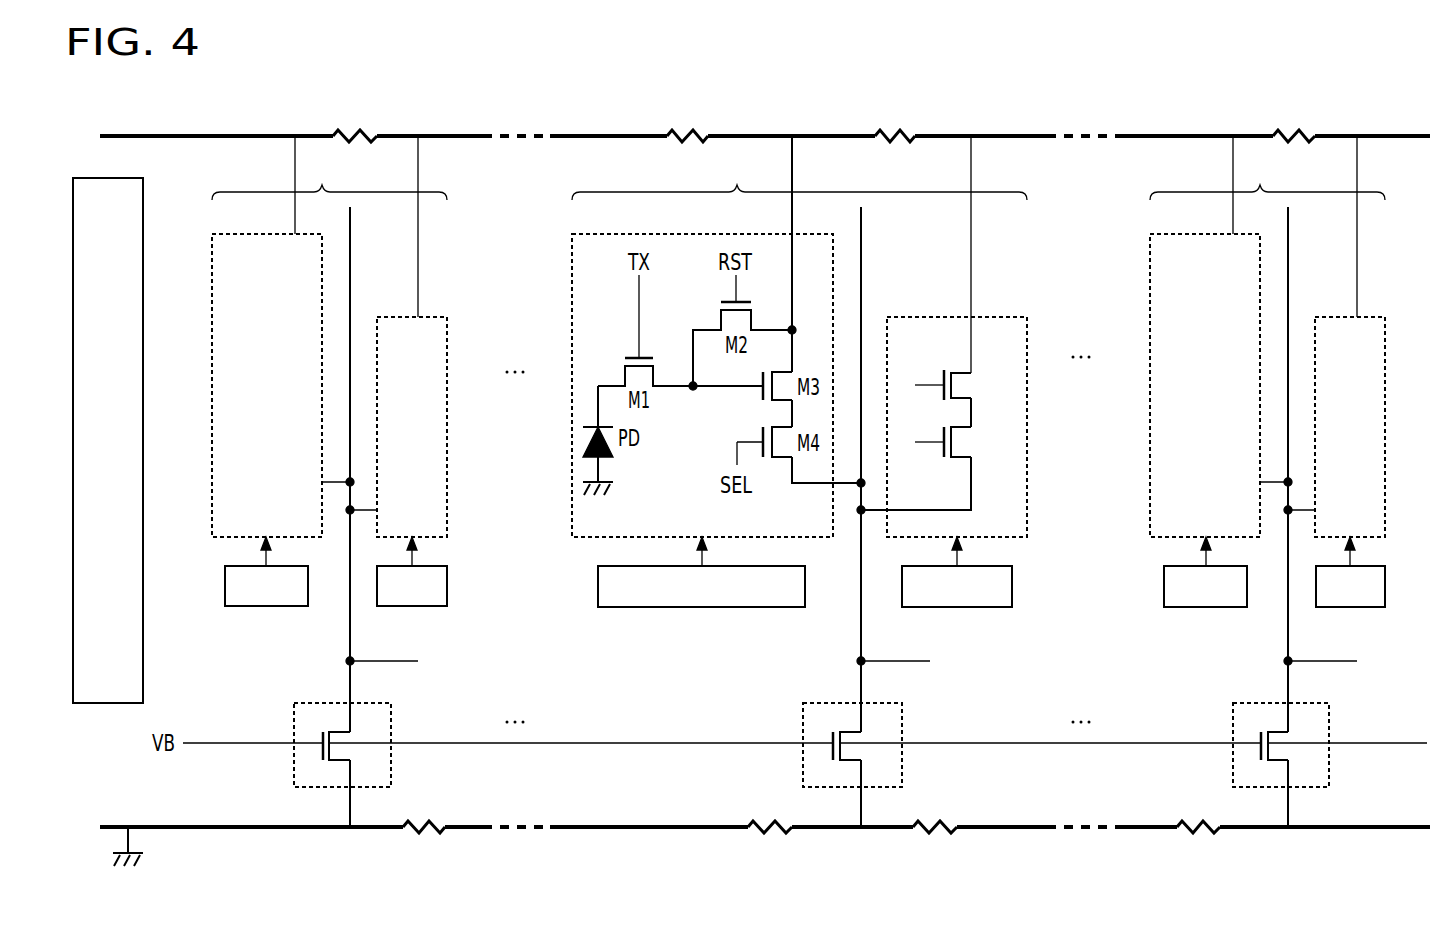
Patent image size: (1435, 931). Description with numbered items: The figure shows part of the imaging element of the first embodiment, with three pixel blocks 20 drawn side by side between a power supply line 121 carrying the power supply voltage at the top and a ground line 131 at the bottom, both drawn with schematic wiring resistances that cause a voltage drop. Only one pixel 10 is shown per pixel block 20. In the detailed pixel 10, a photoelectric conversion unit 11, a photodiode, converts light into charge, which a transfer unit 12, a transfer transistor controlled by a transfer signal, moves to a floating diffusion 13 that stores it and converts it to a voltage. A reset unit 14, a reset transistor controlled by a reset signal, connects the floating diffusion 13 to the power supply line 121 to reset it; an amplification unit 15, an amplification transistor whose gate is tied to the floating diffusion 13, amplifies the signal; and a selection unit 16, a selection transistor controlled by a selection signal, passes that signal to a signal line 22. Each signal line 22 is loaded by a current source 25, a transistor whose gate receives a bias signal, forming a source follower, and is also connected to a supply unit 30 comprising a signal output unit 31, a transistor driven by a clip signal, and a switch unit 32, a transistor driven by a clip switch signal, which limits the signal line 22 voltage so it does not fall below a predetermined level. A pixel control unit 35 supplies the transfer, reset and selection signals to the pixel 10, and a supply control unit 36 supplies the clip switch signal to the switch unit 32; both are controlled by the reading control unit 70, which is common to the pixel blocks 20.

The power supply line 121 is at (253, 133).
The ground line 131 is at (238, 830).
The reading control unit 70 is at (117, 703).
The pixel block 20 is at (798, 181).
The pixel 10 is at (226, 234).
The photoelectric conversion unit 11 is at (615, 455).
The transfer unit 12 is at (620, 380).
The floating diffusion 13 is at (695, 398).
The reset unit 14 is at (713, 323).
The amplification unit 15 is at (800, 365).
The selection unit 16 is at (753, 431).
The supply unit 30 is at (408, 303).
The signal output unit 31 is at (977, 370).
The switch unit 32 is at (978, 460).
The signal line 22 is at (350, 583).
The pixel control unit 35 is at (253, 606).
The supply control unit 36 is at (391, 606).
The current source 25 is at (391, 725).